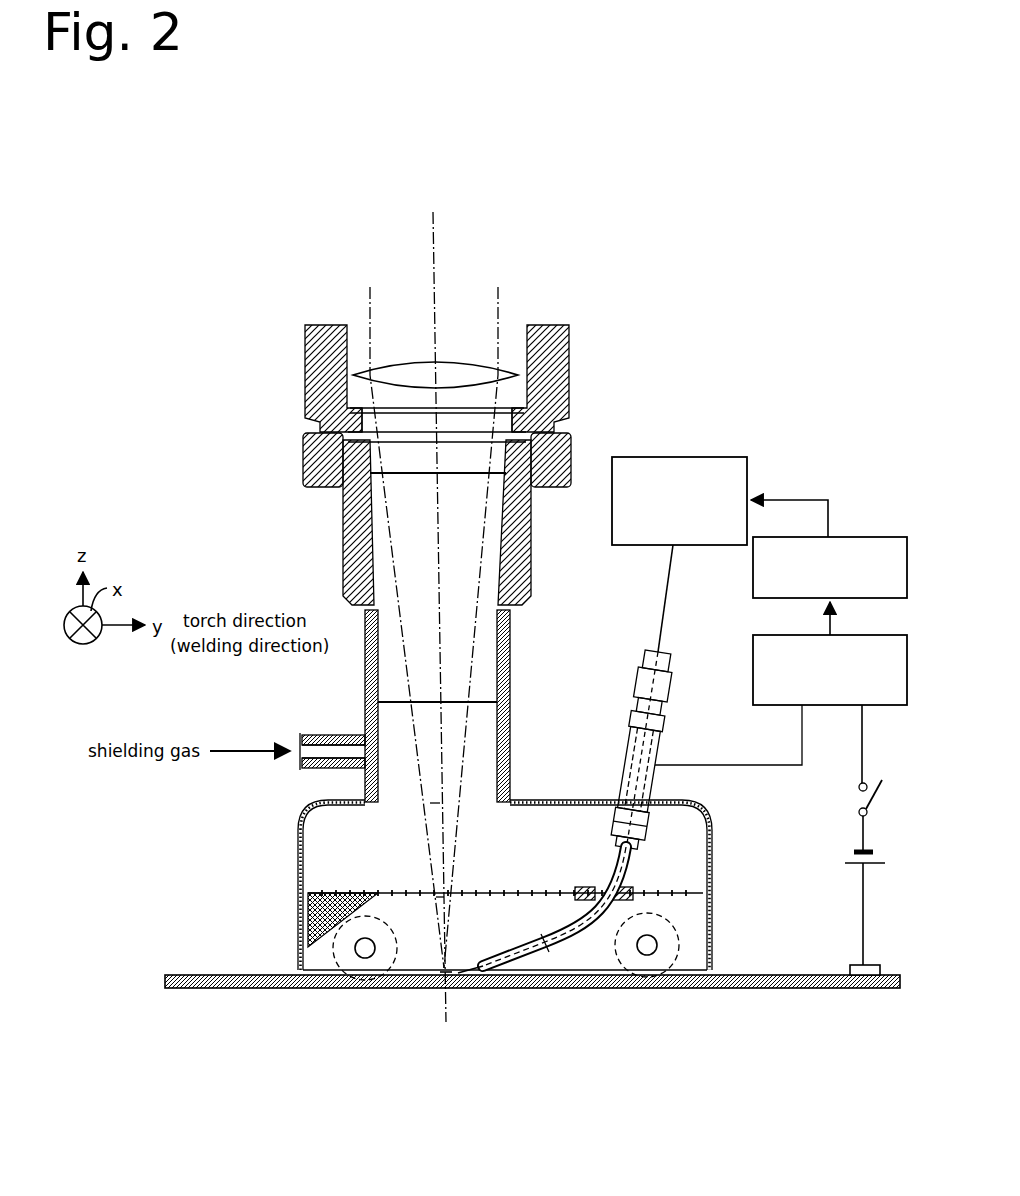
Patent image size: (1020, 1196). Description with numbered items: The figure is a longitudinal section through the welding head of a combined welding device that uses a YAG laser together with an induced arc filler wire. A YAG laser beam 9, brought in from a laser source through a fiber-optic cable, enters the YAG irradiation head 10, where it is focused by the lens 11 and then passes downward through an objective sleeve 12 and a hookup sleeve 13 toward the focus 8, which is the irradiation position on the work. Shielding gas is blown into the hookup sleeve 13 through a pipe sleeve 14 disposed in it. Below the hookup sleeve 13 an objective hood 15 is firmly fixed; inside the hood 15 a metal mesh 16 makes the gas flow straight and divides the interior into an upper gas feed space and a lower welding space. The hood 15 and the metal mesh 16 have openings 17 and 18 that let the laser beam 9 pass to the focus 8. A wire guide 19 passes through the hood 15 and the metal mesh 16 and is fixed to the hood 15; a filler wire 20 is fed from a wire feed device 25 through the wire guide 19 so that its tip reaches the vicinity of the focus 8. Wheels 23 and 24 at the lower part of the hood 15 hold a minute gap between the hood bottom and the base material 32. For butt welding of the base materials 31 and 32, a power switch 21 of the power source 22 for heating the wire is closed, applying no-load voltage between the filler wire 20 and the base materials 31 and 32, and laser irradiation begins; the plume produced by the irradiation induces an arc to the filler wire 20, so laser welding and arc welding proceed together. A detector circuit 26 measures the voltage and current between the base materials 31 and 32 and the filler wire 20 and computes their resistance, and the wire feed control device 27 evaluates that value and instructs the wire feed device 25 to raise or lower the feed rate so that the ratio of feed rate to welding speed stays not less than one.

The focus 8 is at (440, 985).
The YAG laser beam 9 is at (472, 672).
The YAG irradiation head 10 is at (308, 353).
The lens 11 is at (432, 363).
The objective sleeve 12 is at (348, 562).
The hookup sleeve 13 is at (368, 710).
The pipe sleeve 14 is at (312, 737).
The objective hood 15 is at (300, 837).
The metal mesh 16 is at (397, 893).
The opening 17 is at (432, 808).
The opening 18 is at (437, 900).
The wire guide 19 is at (660, 745).
The filler wire 20 is at (670, 602).
The power switch 21 is at (858, 800).
The power source 22 is at (853, 866).
The wheel 23 is at (350, 960).
The wheel 24 is at (628, 957).
The wire feed device 25 is at (717, 456).
The detector circuit 26 is at (850, 635).
The wire feed control device 27 is at (850, 537).
The base material for welding 31 is at (748, 985).
The base material for welding 32 is at (773, 973).